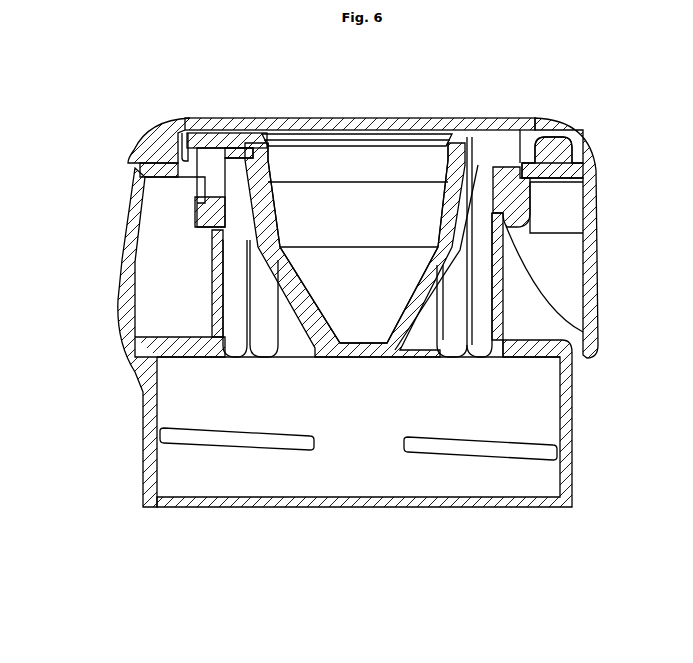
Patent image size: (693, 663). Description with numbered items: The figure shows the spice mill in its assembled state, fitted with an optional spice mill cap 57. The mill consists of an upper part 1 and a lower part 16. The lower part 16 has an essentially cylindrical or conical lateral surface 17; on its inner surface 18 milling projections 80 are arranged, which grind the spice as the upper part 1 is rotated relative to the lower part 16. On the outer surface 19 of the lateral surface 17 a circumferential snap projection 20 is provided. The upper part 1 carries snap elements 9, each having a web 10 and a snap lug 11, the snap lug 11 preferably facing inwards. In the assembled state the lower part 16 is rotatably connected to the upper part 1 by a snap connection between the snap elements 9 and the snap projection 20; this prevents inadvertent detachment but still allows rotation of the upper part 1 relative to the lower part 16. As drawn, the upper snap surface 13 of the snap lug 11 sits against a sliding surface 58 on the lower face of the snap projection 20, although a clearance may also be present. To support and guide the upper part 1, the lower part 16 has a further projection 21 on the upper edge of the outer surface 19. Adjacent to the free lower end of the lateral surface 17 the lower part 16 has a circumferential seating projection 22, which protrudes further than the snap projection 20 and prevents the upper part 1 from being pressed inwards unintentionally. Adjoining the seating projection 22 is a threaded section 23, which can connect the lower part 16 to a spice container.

The upper part 1 is at (578, 172).
The snap element 9 is at (524, 183).
The web 10 is at (521, 193).
The snap lug 11 is at (526, 207).
The upper snap surface 13 is at (510, 168).
The lower part 16 is at (521, 345).
The lateral surface 17 is at (478, 235).
The inner surface 18 is at (492, 325).
The outer surface 19 is at (505, 286).
The snap projection 20 is at (502, 212).
The further projection 21 is at (525, 150).
The seating projection 22 is at (548, 343).
The threaded section 23 is at (483, 452).
The spice mill cap 57 is at (243, 123).
The sliding surface 58 is at (518, 250).
The milling projections 80 is at (258, 337).